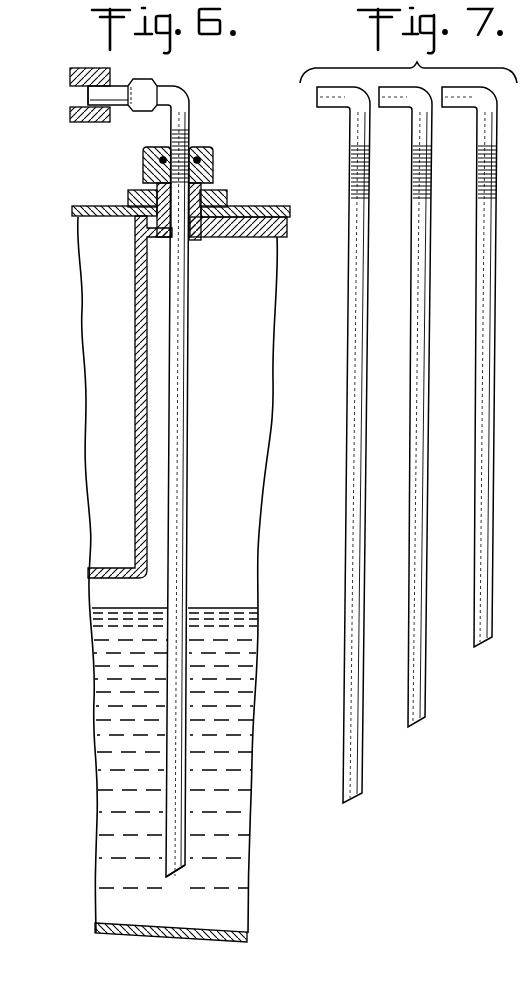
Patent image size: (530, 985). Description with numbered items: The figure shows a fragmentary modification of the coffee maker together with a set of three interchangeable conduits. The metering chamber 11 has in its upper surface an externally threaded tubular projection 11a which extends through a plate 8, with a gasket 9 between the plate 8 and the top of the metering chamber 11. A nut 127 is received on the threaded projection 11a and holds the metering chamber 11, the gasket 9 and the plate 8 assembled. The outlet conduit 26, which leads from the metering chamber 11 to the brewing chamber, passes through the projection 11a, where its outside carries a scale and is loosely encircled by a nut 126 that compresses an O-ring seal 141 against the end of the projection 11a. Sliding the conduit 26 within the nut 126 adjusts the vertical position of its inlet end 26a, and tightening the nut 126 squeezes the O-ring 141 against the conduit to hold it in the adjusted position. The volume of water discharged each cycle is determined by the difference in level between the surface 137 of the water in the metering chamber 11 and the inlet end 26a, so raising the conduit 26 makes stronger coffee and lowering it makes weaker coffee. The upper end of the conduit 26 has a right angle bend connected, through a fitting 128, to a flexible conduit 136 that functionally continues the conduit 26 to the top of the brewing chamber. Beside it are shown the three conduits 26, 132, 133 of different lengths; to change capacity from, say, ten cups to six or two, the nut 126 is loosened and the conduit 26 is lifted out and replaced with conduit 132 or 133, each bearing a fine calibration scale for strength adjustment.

In FIG. 6, the compression fitting 128 is at (80, 68).
In FIG. 6, the flexible conduit 136 is at (118, 121).
In FIG. 6, the O-ring seal 141 is at (145, 152).
In FIG. 6, the nut 126 is at (210, 167).
In FIG. 6, the tubular projection 11a is at (143, 173).
In FIG. 6, the nut 127 is at (227, 193).
In FIG. 6, the plate 8 is at (257, 203).
In FIG. 6, the gasket 9 is at (287, 221).
In FIG. 6, the metering chamber 11 is at (137, 350).
In FIG. 6, the outlet conduit 26 is at (170, 664).
In FIG. 7, the outlet conduit 26 is at (347, 590).
In FIG. 6, the surface of the water 137 is at (229, 608).
In FIG. 6, the inlet end 26a is at (172, 878).
In FIG. 7, the conduit 132 is at (425, 533).
In FIG. 7, the conduit 133 is at (490, 523).